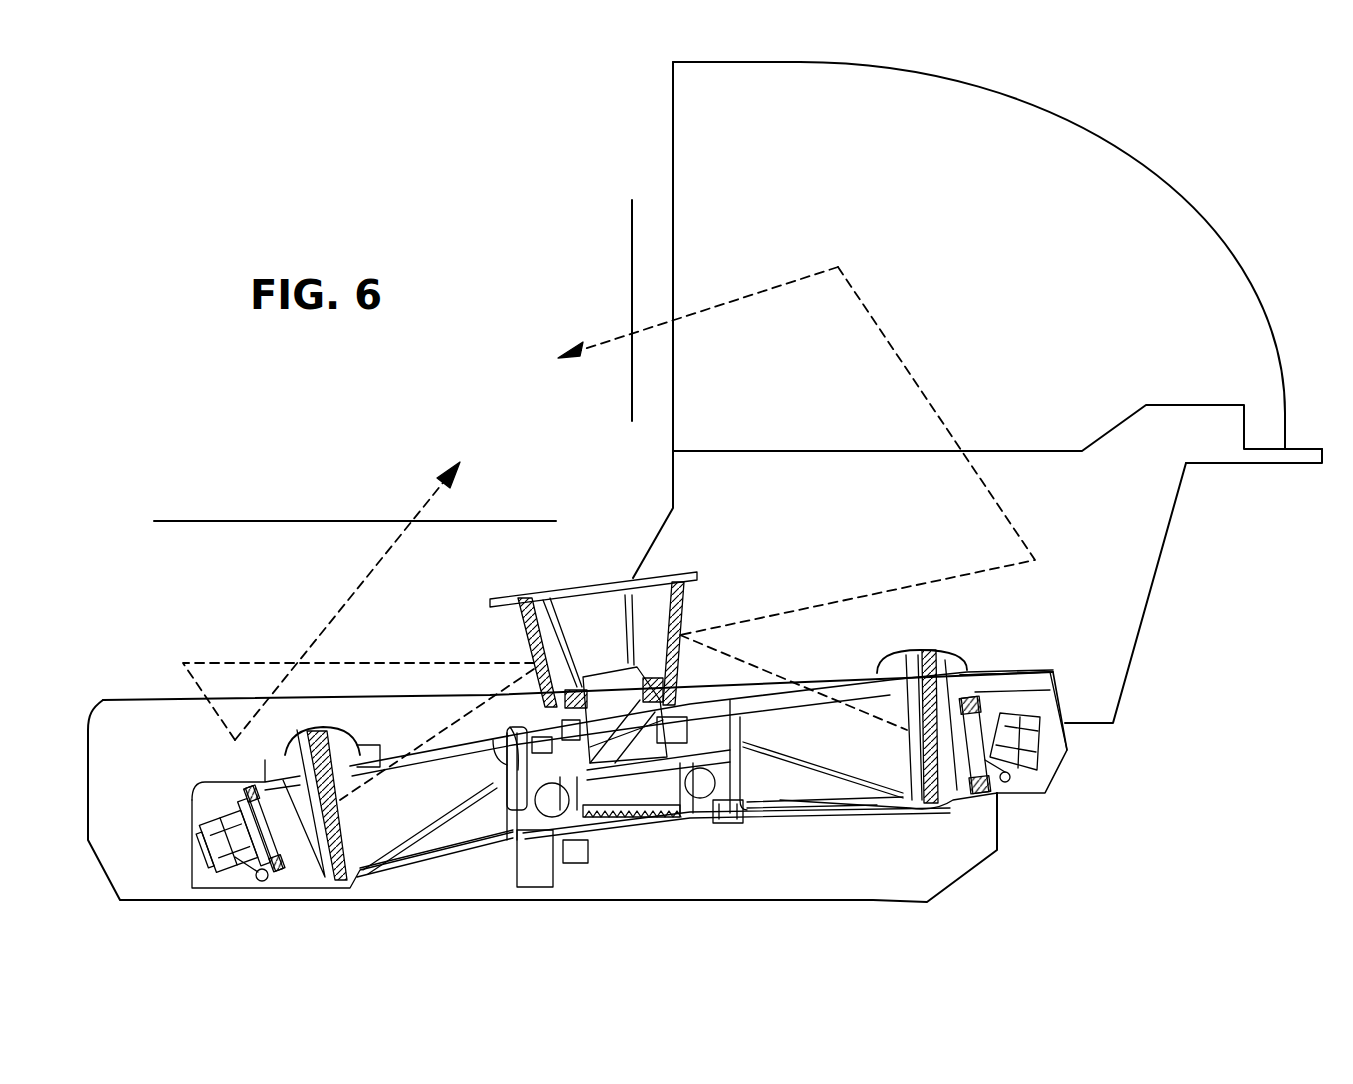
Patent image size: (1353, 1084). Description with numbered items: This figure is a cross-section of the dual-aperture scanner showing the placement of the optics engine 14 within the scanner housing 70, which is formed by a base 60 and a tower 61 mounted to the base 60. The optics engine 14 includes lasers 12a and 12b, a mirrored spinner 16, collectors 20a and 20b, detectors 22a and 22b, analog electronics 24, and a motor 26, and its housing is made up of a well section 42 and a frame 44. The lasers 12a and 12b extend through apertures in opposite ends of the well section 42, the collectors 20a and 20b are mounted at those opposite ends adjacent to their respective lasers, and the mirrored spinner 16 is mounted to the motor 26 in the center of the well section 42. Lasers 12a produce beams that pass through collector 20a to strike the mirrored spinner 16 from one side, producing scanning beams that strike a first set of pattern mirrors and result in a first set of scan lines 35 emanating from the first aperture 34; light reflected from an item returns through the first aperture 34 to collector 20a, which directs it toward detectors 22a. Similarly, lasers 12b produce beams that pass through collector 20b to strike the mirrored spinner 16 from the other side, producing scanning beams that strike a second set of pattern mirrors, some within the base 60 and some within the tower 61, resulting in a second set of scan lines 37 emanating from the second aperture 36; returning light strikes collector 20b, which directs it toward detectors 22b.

The lasers 12a is at (223, 853).
The lasers 12b is at (1037, 767).
The optics engine 14 is at (1062, 752).
The mirrored spinner 16 is at (513, 628).
The collector 20a is at (303, 737).
The collector 20b is at (925, 650).
The detectors 22a is at (490, 784).
The detectors 22b is at (710, 790).
The analog electronics 24 is at (727, 824).
The motor 26 is at (643, 777).
The first aperture 34 is at (260, 521).
The first set of scan lines 35 is at (354, 598).
The second aperture 36 is at (632, 280).
The second set of scan lines 37 is at (724, 312).
The well section 42 is at (870, 808).
The frame 44 is at (1043, 672).
The base 60 is at (833, 903).
The tower 61 is at (1223, 229).
The scanner housing 70 is at (1163, 541).